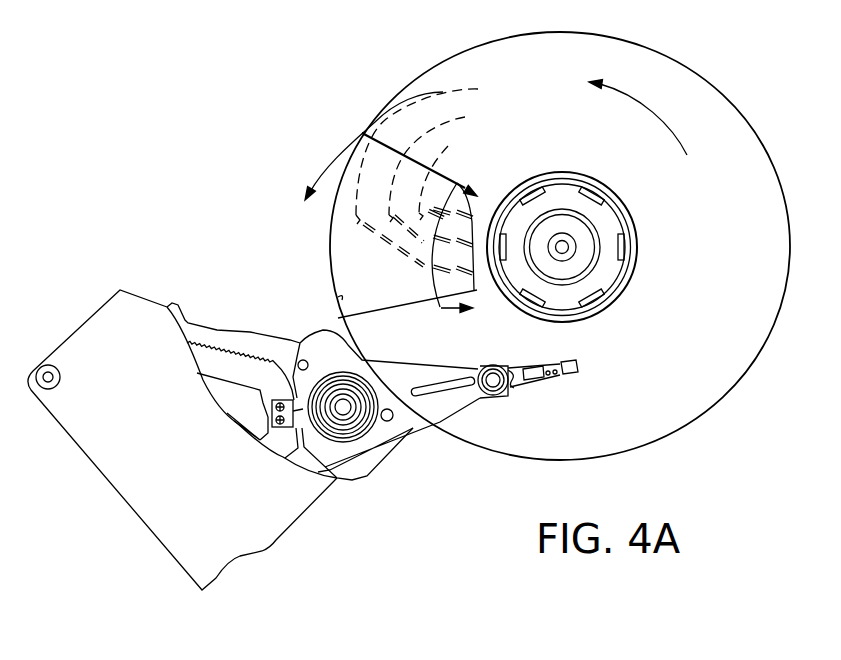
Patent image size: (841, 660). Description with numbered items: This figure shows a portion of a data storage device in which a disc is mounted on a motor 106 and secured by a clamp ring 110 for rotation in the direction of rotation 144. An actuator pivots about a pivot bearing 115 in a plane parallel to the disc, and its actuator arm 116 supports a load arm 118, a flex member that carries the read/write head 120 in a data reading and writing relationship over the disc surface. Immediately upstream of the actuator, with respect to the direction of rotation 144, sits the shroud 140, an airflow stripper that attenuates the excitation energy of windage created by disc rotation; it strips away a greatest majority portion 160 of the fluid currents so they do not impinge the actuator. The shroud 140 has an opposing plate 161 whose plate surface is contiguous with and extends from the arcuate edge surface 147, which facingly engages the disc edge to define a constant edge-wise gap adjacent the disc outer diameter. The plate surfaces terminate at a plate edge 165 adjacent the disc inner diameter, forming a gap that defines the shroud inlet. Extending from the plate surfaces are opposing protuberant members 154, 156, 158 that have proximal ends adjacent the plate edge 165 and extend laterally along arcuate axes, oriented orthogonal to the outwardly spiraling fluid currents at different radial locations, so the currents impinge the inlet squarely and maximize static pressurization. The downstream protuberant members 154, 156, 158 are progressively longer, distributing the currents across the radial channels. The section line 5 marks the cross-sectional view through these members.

The section line 5- 5 is at (426, 227).
The motor 106 is at (568, 249).
The clamp ring 110 is at (612, 190).
The pivot bearing 115 is at (182, 440).
The actuator arm 116 is at (477, 401).
The load arm 118 is at (545, 381).
The read/write head 120 is at (578, 365).
The shroud 140 is at (322, 274).
The direction of rotation 144 is at (651, 98).
The arcuate edge surface 147 is at (336, 300).
The first protuberant member 154 is at (452, 178).
The second protuberant member 156 is at (460, 118).
The third protuberant member 158 is at (477, 90).
The greatest majority portion of fluid currents 160 is at (396, 112).
The plate 161 is at (371, 296).
The plate edge 165 is at (474, 273).